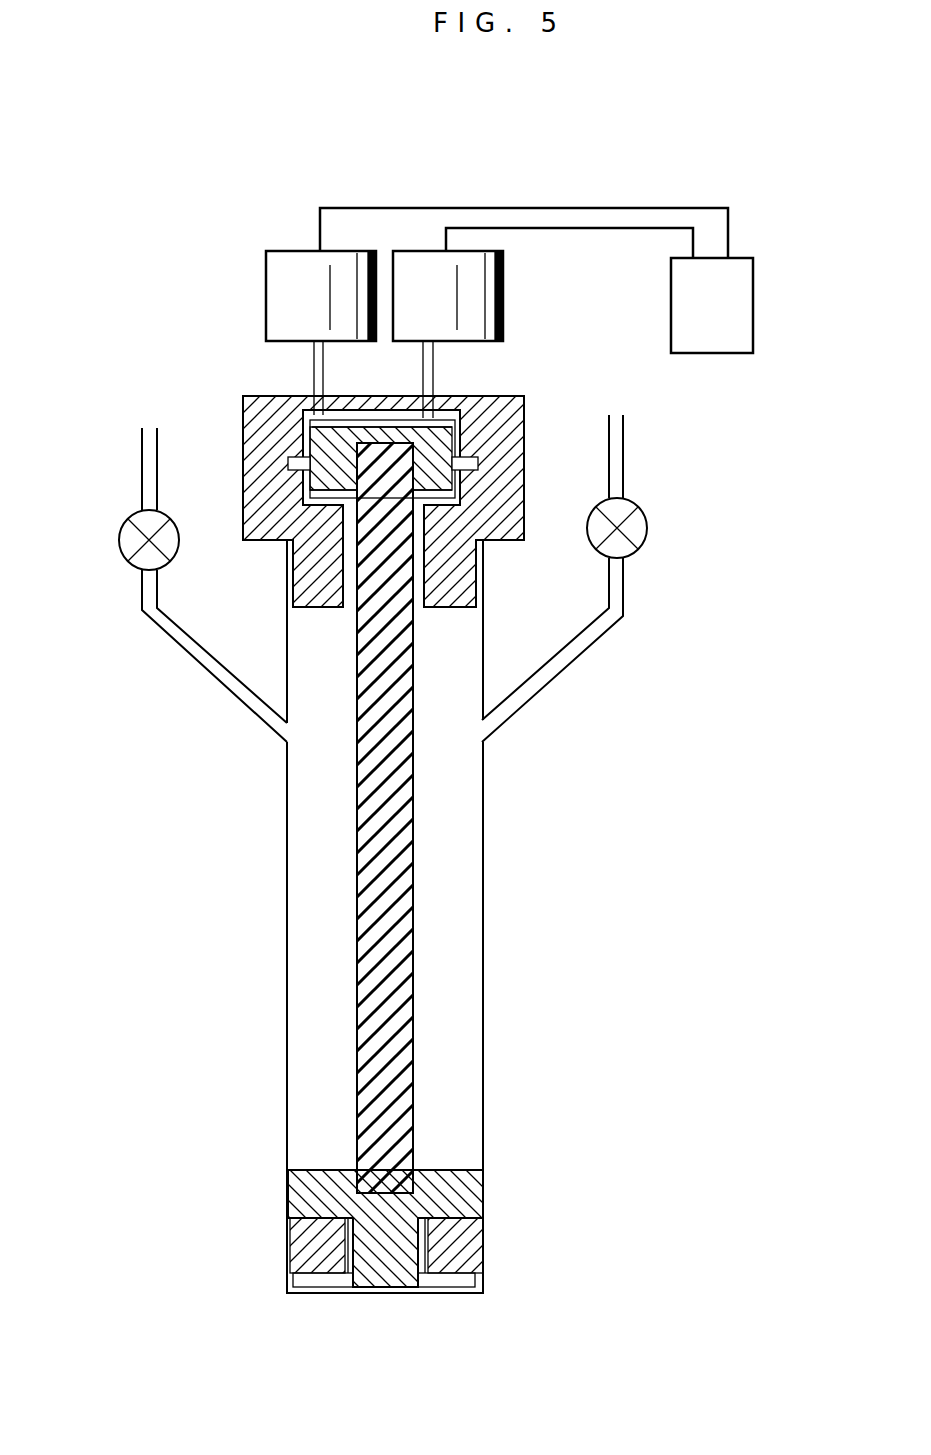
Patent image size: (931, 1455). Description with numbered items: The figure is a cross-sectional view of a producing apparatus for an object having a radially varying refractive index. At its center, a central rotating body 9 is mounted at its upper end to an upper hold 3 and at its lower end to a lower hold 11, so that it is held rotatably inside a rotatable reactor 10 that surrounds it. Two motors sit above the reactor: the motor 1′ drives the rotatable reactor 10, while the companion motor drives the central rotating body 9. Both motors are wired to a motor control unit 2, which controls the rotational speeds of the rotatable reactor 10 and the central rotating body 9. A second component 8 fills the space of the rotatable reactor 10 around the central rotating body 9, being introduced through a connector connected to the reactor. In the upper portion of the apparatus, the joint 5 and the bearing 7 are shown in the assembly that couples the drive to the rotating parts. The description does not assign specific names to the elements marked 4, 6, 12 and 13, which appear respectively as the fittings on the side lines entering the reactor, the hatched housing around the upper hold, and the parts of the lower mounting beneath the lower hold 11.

The motor 1′ is at (285, 251).
The motor control unit 2 is at (753, 287).
The upper hold 3 is at (468, 412).
The valve 4 is at (118, 527).
The joint 5 is at (477, 463).
The housing block 6 is at (524, 448).
The bearing 7 is at (357, 417).
The second component 8 is at (467, 864).
The central rotating body 9 is at (408, 1018).
The rotatable reactor 10 is at (483, 1068).
The lower hold 11 is at (483, 1190).
The side blocks 12 is at (428, 1258).
The plates 13 is at (483, 1280).